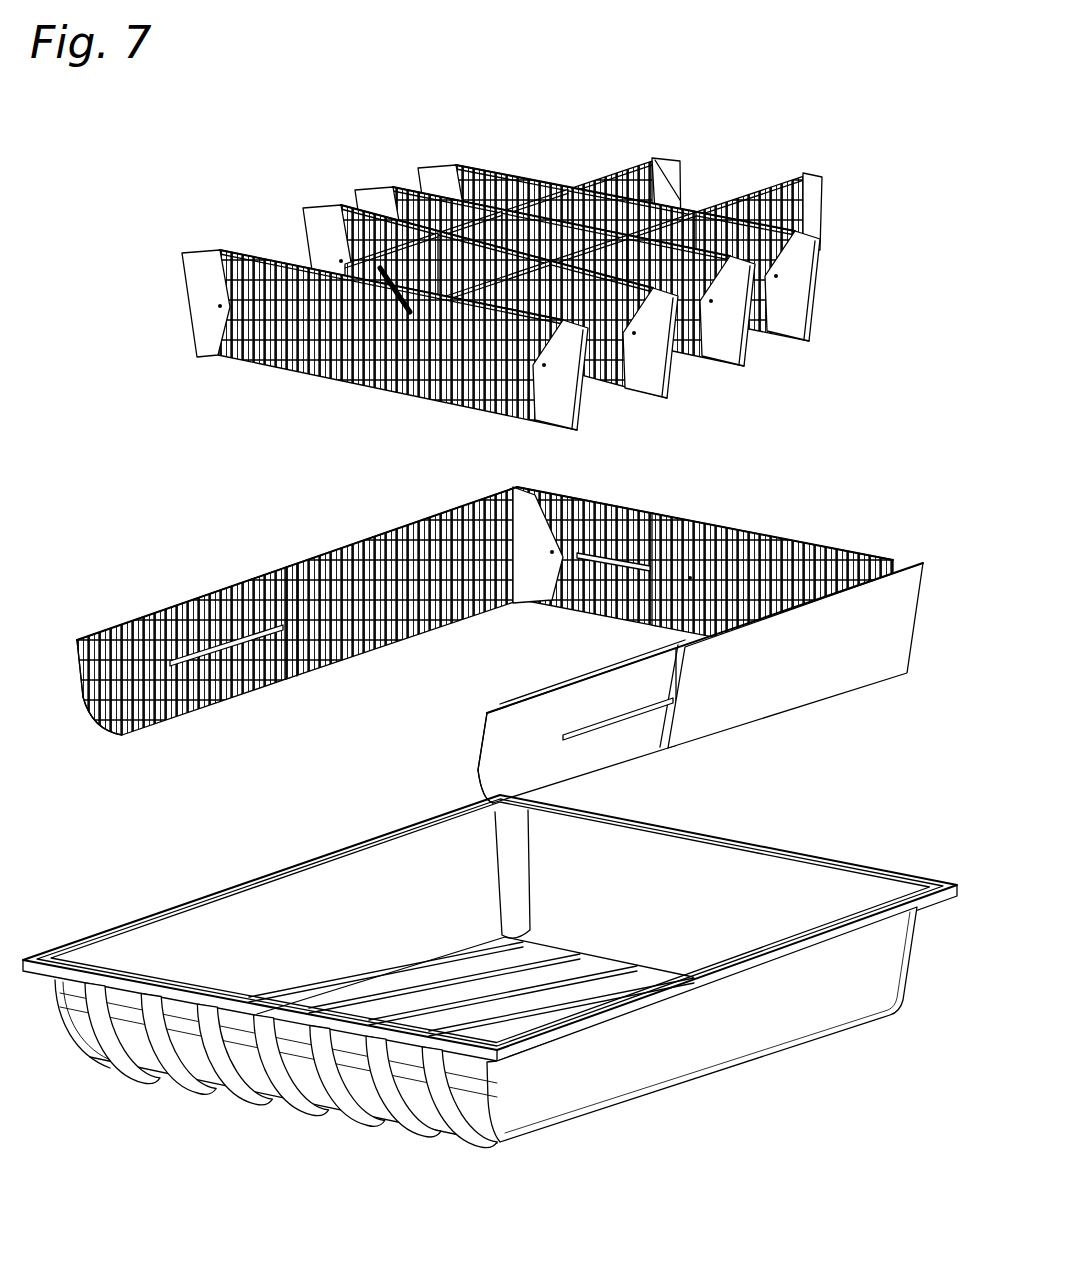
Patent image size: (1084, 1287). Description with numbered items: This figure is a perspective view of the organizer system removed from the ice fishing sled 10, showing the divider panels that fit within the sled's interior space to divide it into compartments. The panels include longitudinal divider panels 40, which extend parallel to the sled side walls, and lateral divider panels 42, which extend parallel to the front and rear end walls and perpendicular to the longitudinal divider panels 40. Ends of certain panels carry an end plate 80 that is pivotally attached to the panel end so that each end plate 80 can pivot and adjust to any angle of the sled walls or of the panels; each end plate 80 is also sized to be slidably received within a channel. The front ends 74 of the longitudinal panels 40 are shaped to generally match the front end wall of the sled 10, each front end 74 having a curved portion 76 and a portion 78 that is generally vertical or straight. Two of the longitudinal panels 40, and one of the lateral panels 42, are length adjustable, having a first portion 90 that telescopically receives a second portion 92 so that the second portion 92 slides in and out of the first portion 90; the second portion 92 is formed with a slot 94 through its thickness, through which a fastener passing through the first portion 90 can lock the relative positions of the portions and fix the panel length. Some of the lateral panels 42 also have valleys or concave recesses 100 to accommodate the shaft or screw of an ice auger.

The sled 10 is at (737, 1090).
The longitudinal divider panel 40 is at (833, 700).
The lateral divider panel 42 is at (482, 640).
The front end 74 is at (73, 693).
The curved portion 76 is at (103, 730).
The portion 78 is at (83, 665).
The end plate 80 is at (480, 308).
The first portion 90 is at (405, 547).
The second portion 92 is at (627, 520).
The slot 94 is at (217, 670).
The concave recess 100 is at (428, 300).